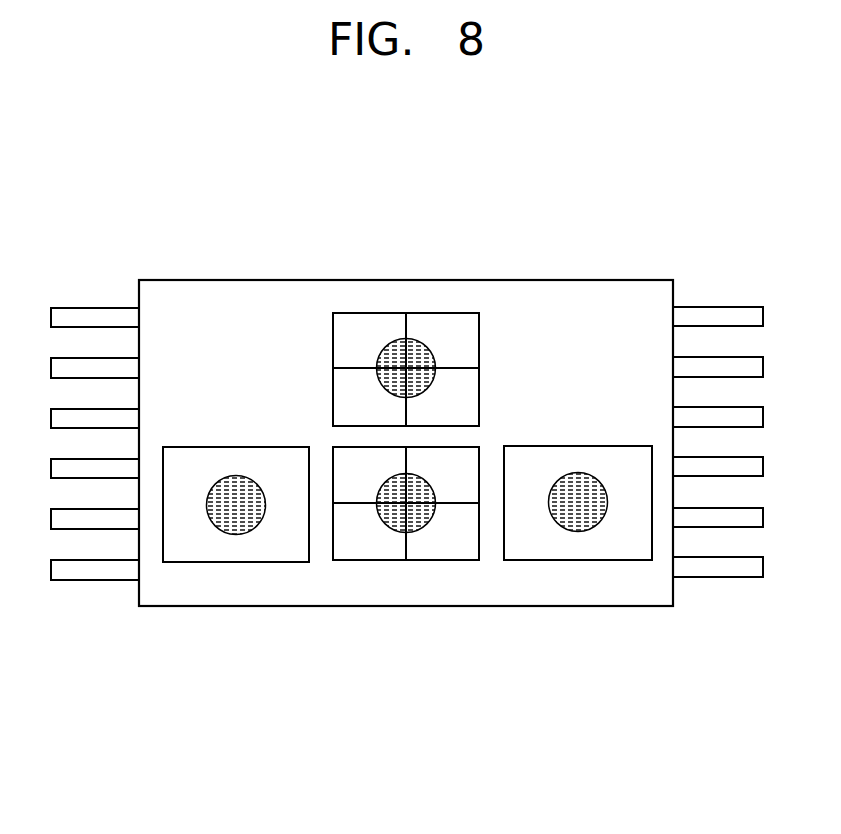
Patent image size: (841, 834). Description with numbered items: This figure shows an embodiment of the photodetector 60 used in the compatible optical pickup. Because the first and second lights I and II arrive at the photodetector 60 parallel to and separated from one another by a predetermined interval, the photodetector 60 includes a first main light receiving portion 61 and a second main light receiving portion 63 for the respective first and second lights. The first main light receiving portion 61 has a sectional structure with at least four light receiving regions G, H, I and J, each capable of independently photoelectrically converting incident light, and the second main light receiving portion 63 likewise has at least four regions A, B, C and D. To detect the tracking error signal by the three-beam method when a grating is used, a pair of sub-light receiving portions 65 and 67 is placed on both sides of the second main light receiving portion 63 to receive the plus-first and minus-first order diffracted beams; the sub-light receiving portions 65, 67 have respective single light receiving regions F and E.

The photodetector 60 is at (157, 263).
The first main light receiving portion 61 is at (480, 378).
The second main light receiving portion 63 is at (432, 560).
The sub-light receiving portion 65 is at (236, 447).
The sub-light receiving portion 67 is at (577, 446).